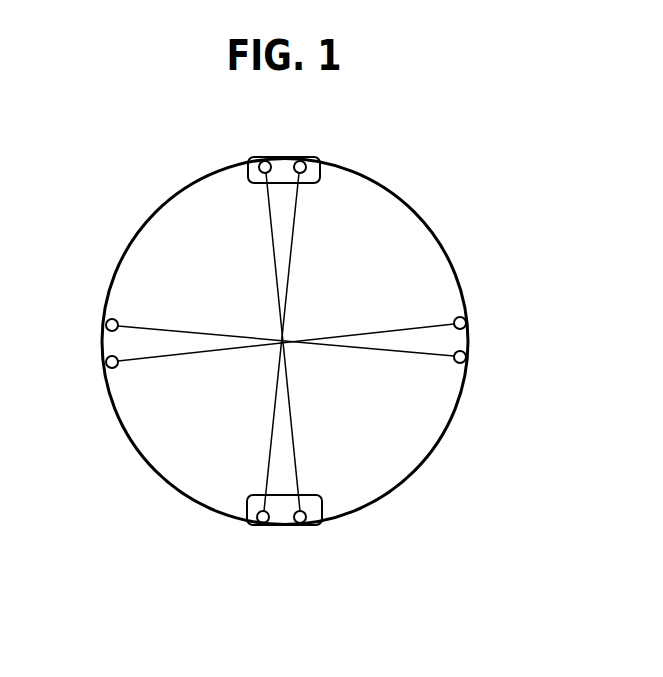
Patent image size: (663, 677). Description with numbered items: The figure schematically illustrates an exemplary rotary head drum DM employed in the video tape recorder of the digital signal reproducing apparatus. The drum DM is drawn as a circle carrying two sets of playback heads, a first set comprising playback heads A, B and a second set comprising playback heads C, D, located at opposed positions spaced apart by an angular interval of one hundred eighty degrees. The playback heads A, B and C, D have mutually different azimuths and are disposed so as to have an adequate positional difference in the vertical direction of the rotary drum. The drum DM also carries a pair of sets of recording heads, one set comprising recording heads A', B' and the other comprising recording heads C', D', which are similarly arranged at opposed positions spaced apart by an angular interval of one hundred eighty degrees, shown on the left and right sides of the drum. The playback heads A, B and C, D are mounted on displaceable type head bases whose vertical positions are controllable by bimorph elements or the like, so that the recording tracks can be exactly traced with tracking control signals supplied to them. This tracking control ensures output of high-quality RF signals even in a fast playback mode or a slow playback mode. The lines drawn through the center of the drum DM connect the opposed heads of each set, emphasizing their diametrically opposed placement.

The rotary head drum DM is at (438, 222).
The playback head A is at (260, 544).
The playback head B is at (302, 544).
The playback head C is at (287, 312).
The playback head D is at (277, 312).
The recording head A' is at (482, 357).
The recording head B' is at (482, 323).
The recording head C' is at (255, 334).
The recording head D' is at (255, 349).